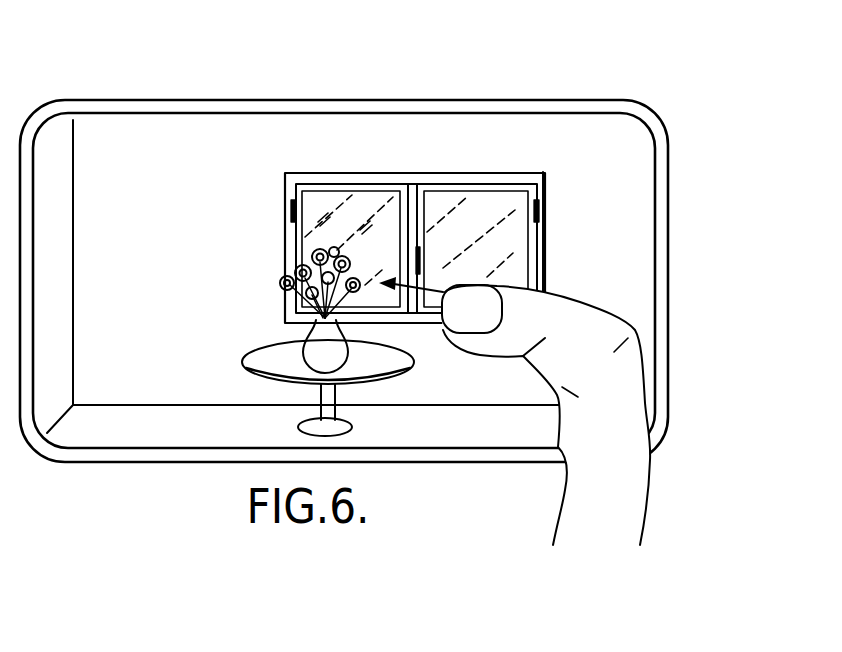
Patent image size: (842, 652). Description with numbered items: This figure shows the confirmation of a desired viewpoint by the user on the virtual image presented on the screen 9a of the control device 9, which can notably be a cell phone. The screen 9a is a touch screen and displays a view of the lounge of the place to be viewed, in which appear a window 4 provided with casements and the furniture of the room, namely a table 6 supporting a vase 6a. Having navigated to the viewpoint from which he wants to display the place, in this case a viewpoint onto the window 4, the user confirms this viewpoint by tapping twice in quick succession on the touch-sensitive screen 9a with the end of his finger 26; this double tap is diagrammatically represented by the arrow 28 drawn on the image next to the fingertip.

The window 4 is at (386, 200).
The table 6 is at (270, 369).
The vase 6a is at (322, 342).
The control device 9 is at (627, 97).
The screen 9a is at (543, 135).
The finger 26 is at (596, 353).
The arrow 28 is at (440, 294).